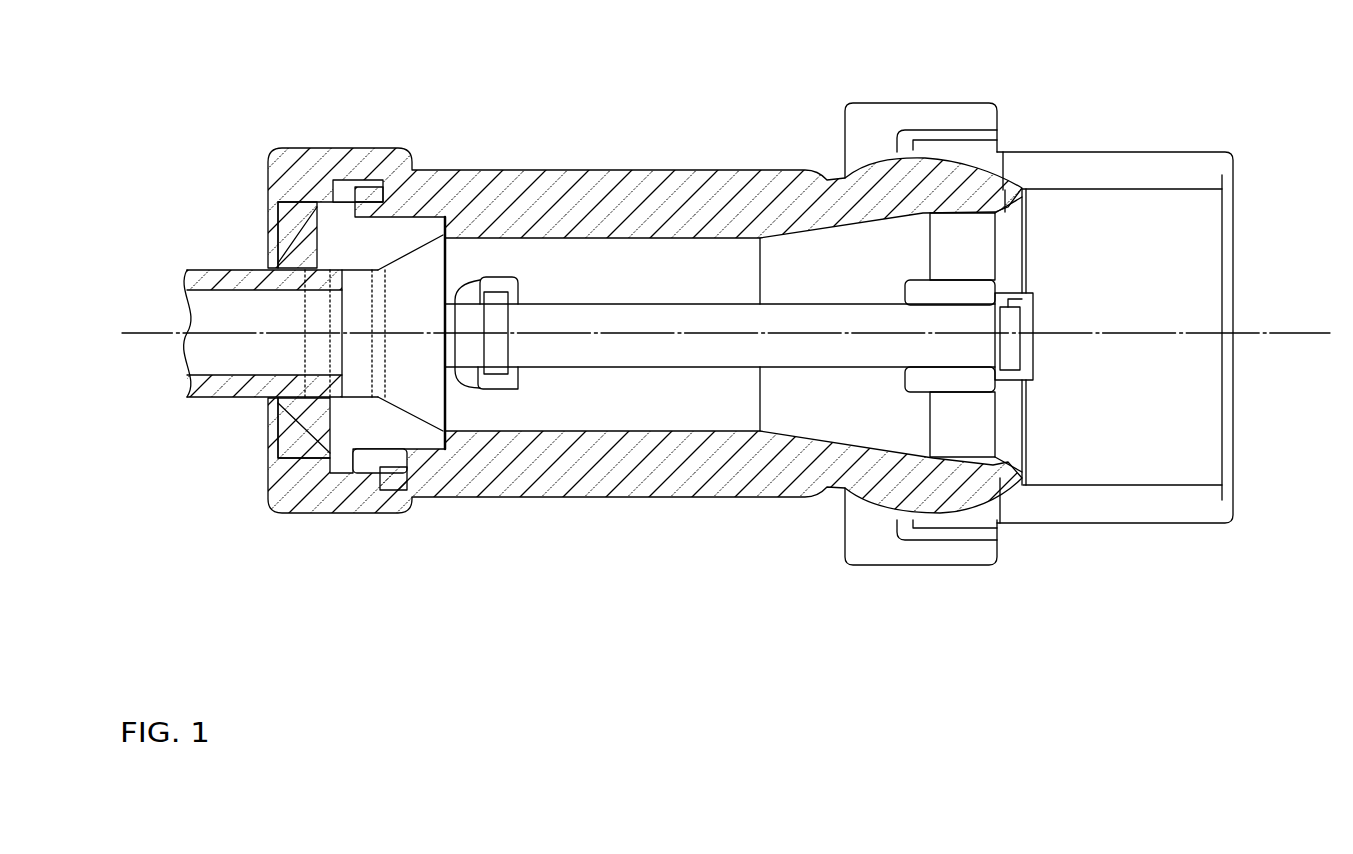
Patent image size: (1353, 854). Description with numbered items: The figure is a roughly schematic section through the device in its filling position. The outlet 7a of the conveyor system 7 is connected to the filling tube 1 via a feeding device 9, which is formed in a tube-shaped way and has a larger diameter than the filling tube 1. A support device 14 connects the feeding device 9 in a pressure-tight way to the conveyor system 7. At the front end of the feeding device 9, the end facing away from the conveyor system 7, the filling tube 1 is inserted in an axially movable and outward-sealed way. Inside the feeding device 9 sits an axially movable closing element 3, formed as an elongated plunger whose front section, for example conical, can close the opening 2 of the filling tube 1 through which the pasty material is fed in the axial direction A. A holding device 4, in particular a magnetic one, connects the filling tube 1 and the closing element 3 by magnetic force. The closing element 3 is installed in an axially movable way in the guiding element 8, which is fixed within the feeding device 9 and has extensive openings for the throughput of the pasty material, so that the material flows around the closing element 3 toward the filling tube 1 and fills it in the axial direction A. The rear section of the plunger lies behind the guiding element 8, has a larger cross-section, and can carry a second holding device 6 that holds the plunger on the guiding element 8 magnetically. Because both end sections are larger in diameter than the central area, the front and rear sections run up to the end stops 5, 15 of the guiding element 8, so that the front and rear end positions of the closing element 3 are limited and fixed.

The filling tube 1 is at (197, 399).
The opening 2 is at (337, 310).
The closing element 3 is at (663, 362).
The holding device 4 is at (513, 382).
The end stop 5 is at (1000, 397).
The second holding device 6 is at (1017, 347).
The conveyor system 7 is at (1152, 508).
The outlet 7a is at (1233, 408).
The guiding element 8 is at (972, 292).
The feeding device 9 is at (776, 170).
The support device 14 is at (936, 103).
The end stop 15 is at (905, 378).
The axial direction A is at (714, 334).